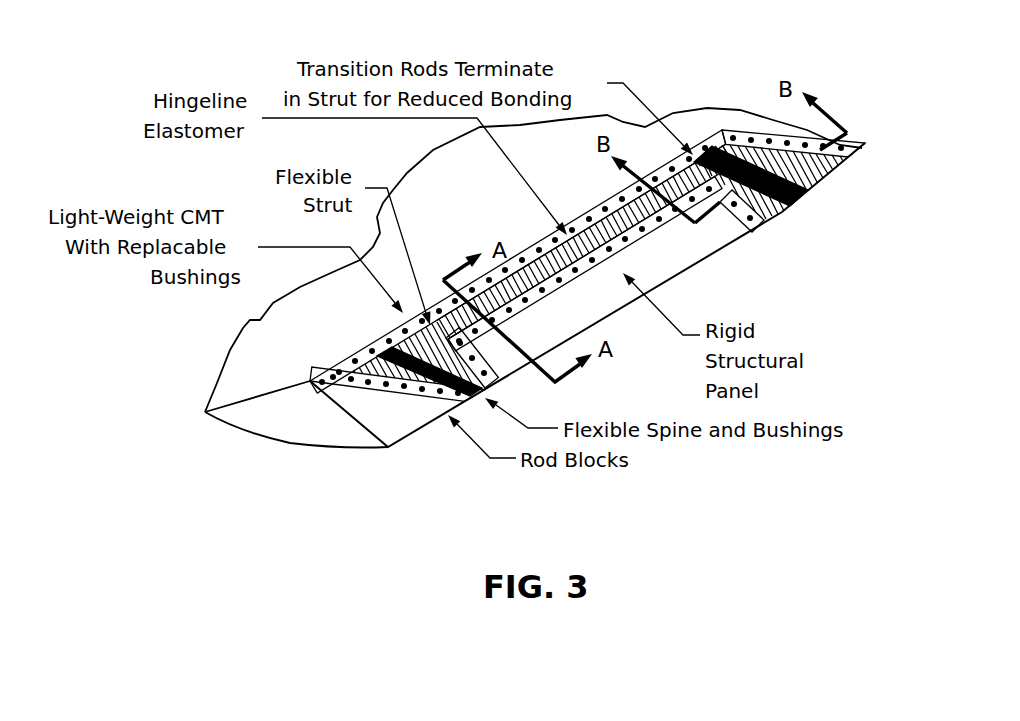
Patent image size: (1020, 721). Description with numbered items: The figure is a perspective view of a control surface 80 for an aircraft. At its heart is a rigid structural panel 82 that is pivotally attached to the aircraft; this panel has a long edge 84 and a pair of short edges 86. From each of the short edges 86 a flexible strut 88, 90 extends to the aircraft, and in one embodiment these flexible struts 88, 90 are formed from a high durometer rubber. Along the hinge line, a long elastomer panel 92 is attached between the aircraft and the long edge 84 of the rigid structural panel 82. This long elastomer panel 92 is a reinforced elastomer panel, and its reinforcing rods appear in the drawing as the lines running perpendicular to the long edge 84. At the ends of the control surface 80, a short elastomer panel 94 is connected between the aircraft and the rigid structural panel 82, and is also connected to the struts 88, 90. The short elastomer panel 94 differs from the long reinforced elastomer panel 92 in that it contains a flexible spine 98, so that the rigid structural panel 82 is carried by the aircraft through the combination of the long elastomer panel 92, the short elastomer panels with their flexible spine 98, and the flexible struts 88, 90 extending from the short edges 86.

The control surface 80 is at (563, 29).
The rigid structural panel 82 is at (722, 233).
The long edge 84 is at (603, 222).
The short edges 86 is at (717, 137).
The flexible strut 88 is at (432, 307).
The flexible strut 90 is at (690, 165).
The long elastomer panel 92 is at (522, 256).
The short elastomer panel 94 is at (355, 372).
The flexible spine 98 is at (388, 350).